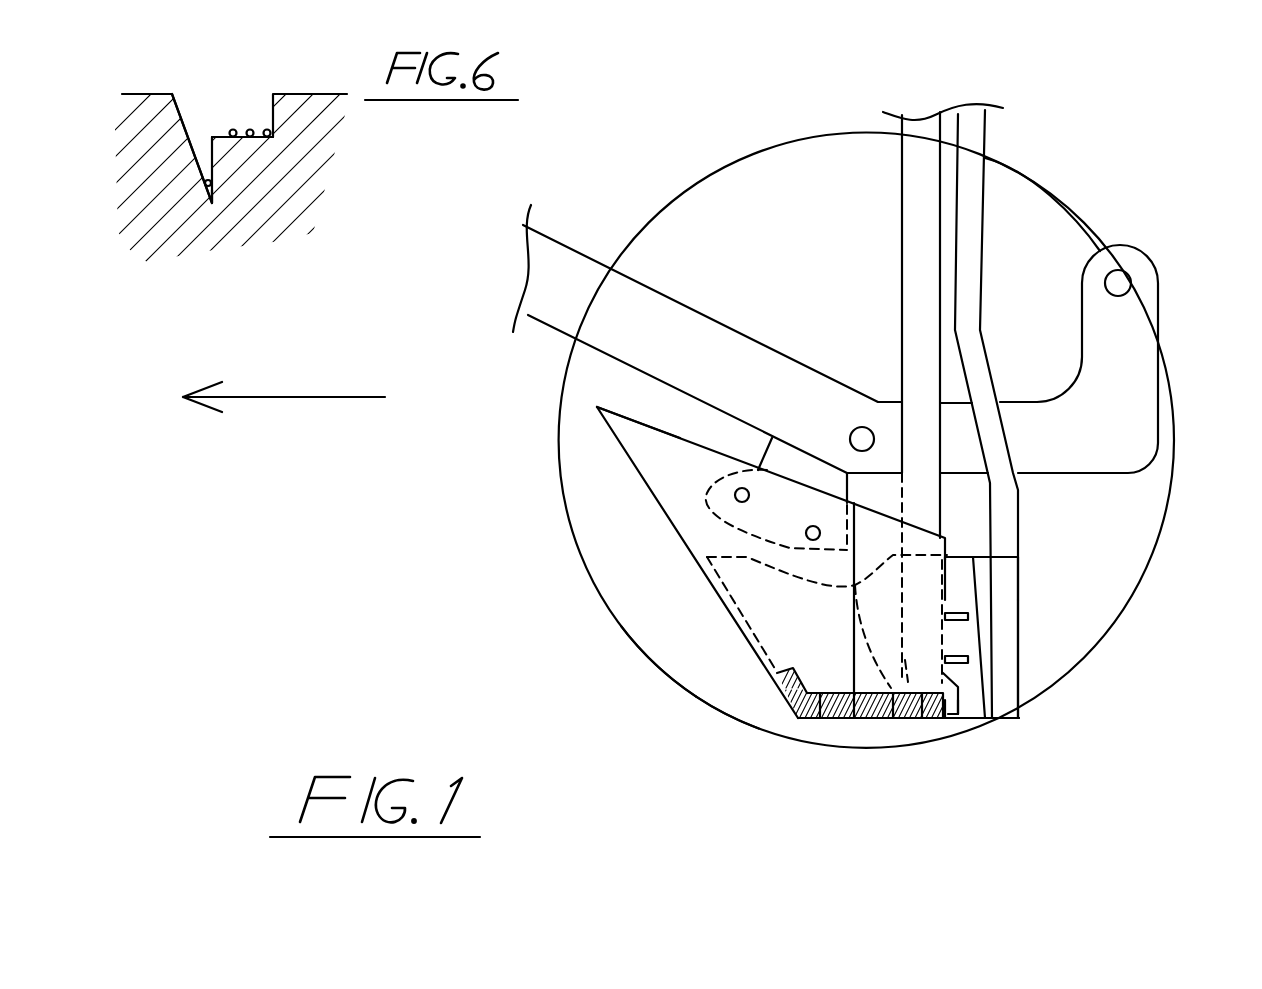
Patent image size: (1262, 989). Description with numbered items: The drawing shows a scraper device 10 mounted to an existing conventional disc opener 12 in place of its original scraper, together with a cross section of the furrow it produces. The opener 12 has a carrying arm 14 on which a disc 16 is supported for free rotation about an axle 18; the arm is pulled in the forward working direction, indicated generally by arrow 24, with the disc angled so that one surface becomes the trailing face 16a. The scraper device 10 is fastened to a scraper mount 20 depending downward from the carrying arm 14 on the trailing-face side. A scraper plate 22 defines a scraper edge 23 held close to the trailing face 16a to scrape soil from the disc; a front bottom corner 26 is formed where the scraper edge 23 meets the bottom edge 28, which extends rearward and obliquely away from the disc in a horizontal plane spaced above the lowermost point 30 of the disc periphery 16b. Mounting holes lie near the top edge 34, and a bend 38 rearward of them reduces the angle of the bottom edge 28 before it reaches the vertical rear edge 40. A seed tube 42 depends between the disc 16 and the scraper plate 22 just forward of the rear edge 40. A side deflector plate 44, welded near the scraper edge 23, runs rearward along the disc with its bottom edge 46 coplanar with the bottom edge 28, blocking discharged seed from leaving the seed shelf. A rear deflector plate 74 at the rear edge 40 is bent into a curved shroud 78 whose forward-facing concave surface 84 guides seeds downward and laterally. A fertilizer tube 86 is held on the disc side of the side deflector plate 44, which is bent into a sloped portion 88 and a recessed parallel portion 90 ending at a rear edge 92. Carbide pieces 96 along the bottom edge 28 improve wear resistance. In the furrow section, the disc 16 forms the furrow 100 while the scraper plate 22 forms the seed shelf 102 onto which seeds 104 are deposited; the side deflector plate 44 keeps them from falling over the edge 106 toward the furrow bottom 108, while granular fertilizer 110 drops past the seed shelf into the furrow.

In FIG. 1, the scraper device 10 is at (1023, 729).
In FIG. 1, the disc opener 12 is at (1166, 150).
In FIG. 1, the carrying arm 14 is at (697, 347).
In FIG. 1, the disc 16 is at (718, 158).
In FIG. 1, the trailing face 16a is at (675, 650).
In FIG. 1, the disc periphery 16b is at (700, 705).
In FIG. 1, the axle 18 is at (862, 438).
In FIG. 1, the scraper mount 20 is at (793, 467).
In FIG. 1, the scraper plate 22 is at (663, 466).
In FIG. 1, the scraper edge 23 is at (663, 510).
In FIG. 1, the arrow 24 is at (314, 397).
In FIG. 1, the front bottom corner 26 is at (795, 725).
In FIG. 1, the bottom edge 28 is at (833, 720).
In FIG. 1, the lowermost point 30 is at (856, 694).
In FIG. 1, the top edge 34 is at (663, 428).
In FIG. 1, the bend 38 is at (892, 720).
In FIG. 1, the rear edge 40 is at (953, 596).
In FIG. 1, the seed tube 42 is at (922, 178).
In FIG. 1, the side deflector plate 44 is at (985, 600).
In FIG. 1, the bottom edge of side deflector plate 46 is at (965, 720).
In FIG. 1, the rear deflector plate 74 is at (965, 677).
In FIG. 1, the curved shroud 78 is at (965, 697).
In FIG. 1, the concave surface 84 is at (943, 720).
In FIG. 1, the fertilizer tube 86 is at (965, 264).
In FIG. 1, the sloped portion 88 is at (982, 573).
In FIG. 1, the parallel portion 90 is at (1003, 620).
In FIG. 1, the rear edge of side deflector plate 92 is at (990, 660).
In FIG. 1, the carbide pieces 96 is at (830, 722).
In FIG. 6, the furrow 100 is at (197, 117).
In FIG. 6, the seed shelf 102 is at (215, 136).
In FIG. 6, the seeds 104 is at (256, 128).
In FIG. 6, the edge of seed shelf 106 is at (207, 137).
In FIG. 6, the furrow bottom 108 is at (213, 207).
In FIG. 6, the granular fertilizer 110 is at (208, 183).